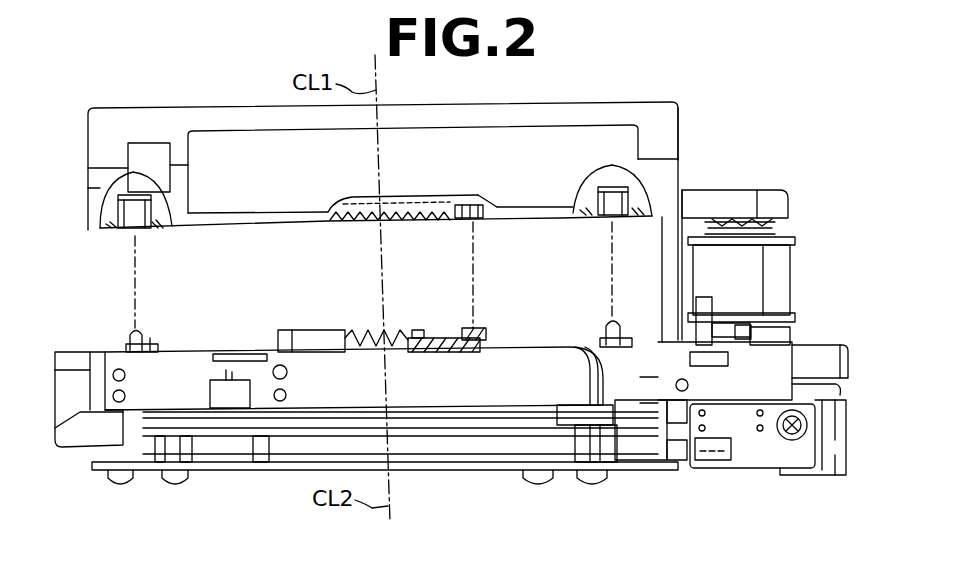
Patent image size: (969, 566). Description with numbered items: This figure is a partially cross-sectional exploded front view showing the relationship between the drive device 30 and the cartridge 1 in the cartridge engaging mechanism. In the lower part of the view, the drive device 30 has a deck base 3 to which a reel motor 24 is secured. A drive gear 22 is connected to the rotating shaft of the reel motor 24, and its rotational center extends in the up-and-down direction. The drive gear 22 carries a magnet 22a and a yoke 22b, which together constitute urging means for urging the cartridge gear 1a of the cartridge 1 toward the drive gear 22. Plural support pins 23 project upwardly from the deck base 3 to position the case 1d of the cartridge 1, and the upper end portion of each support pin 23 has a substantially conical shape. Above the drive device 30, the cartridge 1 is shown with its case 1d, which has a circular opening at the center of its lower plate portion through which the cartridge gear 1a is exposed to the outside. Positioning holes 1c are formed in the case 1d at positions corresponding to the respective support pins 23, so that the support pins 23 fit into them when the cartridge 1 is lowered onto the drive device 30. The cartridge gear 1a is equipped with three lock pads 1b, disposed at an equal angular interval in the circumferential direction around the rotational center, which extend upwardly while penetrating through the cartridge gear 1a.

The cartridge 1 is at (476, 142).
The cartridge gear 1a is at (358, 206).
The lock pad 1b is at (480, 204).
The positioning hole 1c is at (104, 188).
The case 1d is at (679, 140).
The deck base 3 is at (92, 425).
The drive gear 22 is at (318, 330).
The magnet 22a is at (420, 336).
The yoke 22b is at (470, 328).
The support pin 23 is at (134, 328).
The reel motor 24 is at (548, 362).
The drive device 30 is at (860, 402).